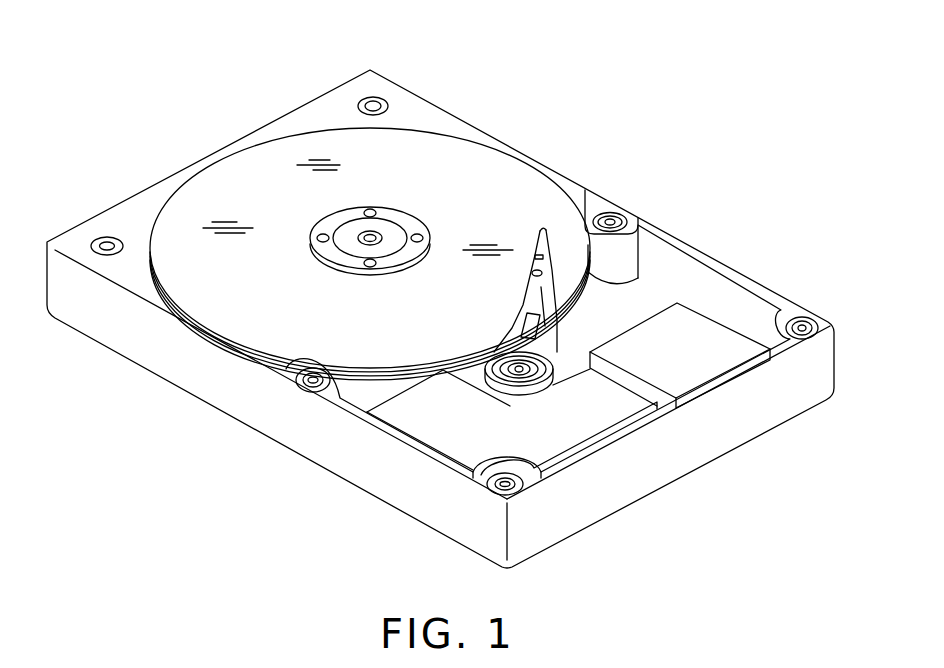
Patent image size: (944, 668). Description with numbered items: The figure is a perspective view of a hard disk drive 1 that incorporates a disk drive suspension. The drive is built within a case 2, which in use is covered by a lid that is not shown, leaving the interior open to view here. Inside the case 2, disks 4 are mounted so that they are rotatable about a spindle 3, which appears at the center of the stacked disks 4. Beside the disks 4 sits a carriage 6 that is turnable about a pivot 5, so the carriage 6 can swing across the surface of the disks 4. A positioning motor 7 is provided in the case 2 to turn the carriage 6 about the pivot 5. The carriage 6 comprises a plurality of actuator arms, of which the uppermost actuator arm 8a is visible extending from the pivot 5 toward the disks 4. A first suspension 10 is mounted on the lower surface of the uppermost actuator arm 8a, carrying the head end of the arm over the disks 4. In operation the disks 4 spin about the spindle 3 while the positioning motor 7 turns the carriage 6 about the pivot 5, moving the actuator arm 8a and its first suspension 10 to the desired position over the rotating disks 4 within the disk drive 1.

The disk drive 1 is at (721, 150).
The case 2 is at (241, 408).
The spindle 3 is at (385, 227).
The disks 4 is at (482, 173).
The pivot 5 is at (524, 376).
The carriage 6 is at (538, 344).
The positioning motor 7 is at (445, 443).
The actuator arm 8a is at (581, 225).
The first suspension 10 is at (538, 233).